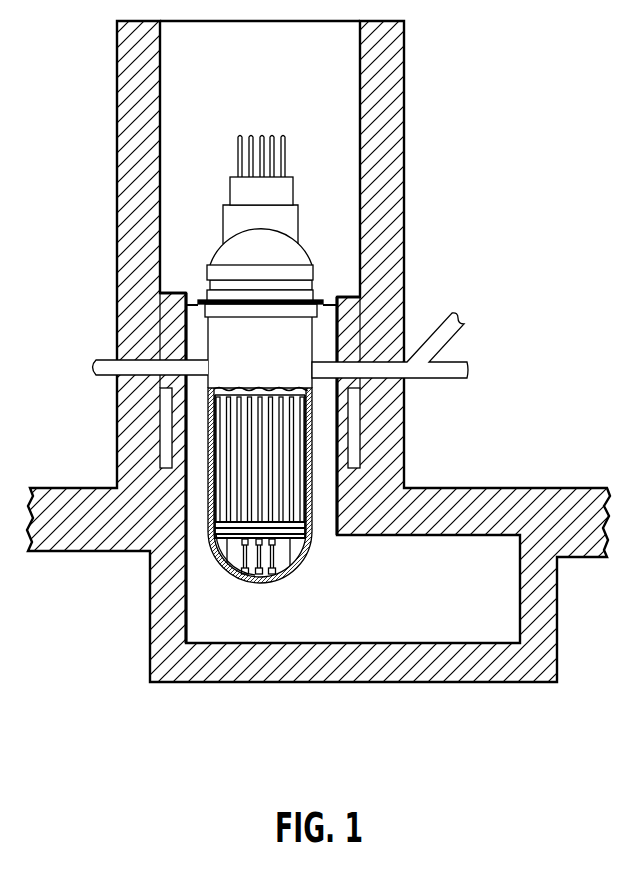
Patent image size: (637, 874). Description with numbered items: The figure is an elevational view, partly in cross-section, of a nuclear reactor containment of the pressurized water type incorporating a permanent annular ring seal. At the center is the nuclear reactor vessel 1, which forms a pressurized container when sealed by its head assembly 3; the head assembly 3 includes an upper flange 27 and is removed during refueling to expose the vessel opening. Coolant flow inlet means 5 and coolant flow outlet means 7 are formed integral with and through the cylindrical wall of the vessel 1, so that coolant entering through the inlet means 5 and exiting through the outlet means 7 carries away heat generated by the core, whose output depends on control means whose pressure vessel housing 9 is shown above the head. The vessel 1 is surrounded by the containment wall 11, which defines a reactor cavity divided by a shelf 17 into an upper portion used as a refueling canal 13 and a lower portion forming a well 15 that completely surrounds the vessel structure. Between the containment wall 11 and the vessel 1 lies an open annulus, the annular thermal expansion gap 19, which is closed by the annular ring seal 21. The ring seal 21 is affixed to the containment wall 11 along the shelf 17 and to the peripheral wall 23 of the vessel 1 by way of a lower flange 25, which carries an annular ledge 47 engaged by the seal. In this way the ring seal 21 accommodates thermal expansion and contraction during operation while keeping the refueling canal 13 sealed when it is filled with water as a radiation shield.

The nuclear reactor vessel 1 is at (266, 349).
The head assembly 3 is at (288, 257).
The coolant flow inlet means 5 is at (442, 340).
The coolant flow outlet means 7 is at (112, 368).
The pressure vessel housing 9 is at (280, 192).
The containment wall 11 is at (395, 80).
The refueling canal 13 is at (250, 62).
The well 15 is at (388, 609).
The shelf 17 is at (155, 292).
The annular thermal expansion gap 19 is at (195, 348).
The annular ring seal 21 is at (192, 298).
The peripheral wall 23 is at (182, 326).
The lower flange 25 is at (223, 297).
The upper flange 27 is at (310, 275).
The annular ledge 47 is at (273, 303).